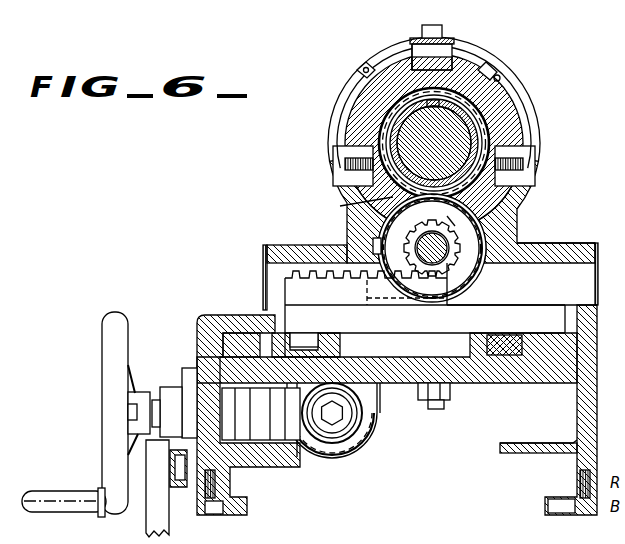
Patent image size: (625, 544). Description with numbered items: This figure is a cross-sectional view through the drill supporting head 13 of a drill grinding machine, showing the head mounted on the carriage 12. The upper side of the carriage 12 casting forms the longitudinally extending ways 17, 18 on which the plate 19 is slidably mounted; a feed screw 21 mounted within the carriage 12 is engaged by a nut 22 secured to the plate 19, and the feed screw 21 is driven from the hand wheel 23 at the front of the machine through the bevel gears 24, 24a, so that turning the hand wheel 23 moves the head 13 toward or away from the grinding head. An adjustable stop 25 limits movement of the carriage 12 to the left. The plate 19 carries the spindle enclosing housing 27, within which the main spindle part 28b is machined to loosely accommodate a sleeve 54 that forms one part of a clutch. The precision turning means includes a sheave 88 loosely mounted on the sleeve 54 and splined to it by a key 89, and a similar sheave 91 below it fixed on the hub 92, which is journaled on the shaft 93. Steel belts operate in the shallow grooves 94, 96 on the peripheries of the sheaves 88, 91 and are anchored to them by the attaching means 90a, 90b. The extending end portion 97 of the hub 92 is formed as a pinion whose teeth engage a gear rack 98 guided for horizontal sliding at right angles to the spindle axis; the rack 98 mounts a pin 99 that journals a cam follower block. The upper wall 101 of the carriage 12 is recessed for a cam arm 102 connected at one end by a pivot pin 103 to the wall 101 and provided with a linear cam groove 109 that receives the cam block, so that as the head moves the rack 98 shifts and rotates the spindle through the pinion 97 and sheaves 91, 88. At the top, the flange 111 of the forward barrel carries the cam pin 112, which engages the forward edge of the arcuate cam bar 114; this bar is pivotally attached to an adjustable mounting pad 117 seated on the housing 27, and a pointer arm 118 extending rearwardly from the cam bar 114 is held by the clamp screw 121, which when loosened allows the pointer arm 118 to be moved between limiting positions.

The carriage 12 is at (598, 402).
The drill supporting head 13 is at (541, 123).
The way 17 is at (230, 342).
The way 18 is at (510, 357).
The plate 19 is at (200, 320).
The feed screw 21 is at (337, 424).
The nut 22 is at (367, 440).
The hand wheel 23 is at (118, 314).
The bevel gear 24 is at (357, 462).
The bevel gear 24a is at (297, 450).
The adjustable stop 25 is at (170, 528).
The spindle enclosing housing 27 is at (372, 100).
The main spindle part 28b is at (487, 68).
The sleeve 54 is at (405, 130).
The sheave 88 is at (470, 120).
The key 89 is at (438, 100).
The attaching means 90a is at (385, 183).
The attaching means 90b is at (372, 246).
The sheave 91 is at (470, 230).
The hub 92 is at (458, 258).
The shaft 93 is at (440, 262).
The groove 94 is at (354, 206).
The groove 96 is at (484, 241).
The pinion 97 is at (441, 213).
The gear rack 98 is at (298, 252).
The pin 99 is at (441, 310).
The upper wall 101 is at (543, 372).
The cam arm 102 is at (452, 388).
The pivot pin 103 is at (443, 408).
The cam groove 109 is at (264, 340).
The flange 111 is at (500, 78).
The cam pin 112 is at (366, 66).
The arcuate cam bar 114 is at (399, 53).
The adjustable mounting pad 117 is at (457, 58).
The pointer arm 118 is at (450, 44).
The clamp screw 121 is at (431, 25).